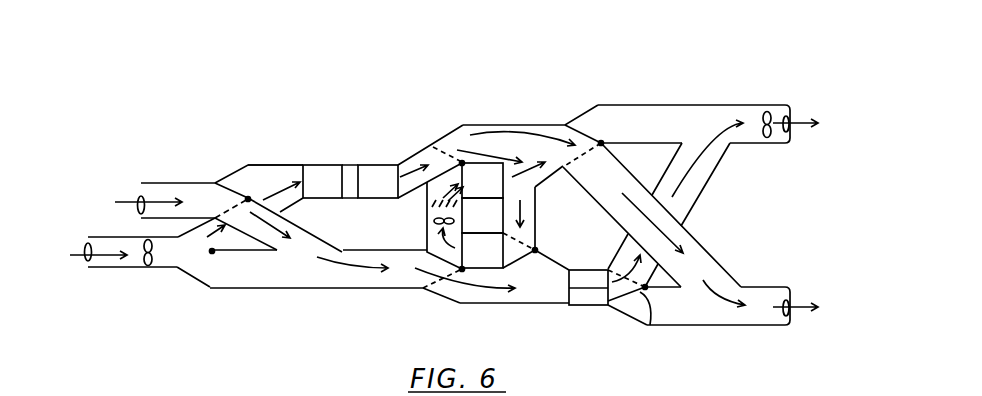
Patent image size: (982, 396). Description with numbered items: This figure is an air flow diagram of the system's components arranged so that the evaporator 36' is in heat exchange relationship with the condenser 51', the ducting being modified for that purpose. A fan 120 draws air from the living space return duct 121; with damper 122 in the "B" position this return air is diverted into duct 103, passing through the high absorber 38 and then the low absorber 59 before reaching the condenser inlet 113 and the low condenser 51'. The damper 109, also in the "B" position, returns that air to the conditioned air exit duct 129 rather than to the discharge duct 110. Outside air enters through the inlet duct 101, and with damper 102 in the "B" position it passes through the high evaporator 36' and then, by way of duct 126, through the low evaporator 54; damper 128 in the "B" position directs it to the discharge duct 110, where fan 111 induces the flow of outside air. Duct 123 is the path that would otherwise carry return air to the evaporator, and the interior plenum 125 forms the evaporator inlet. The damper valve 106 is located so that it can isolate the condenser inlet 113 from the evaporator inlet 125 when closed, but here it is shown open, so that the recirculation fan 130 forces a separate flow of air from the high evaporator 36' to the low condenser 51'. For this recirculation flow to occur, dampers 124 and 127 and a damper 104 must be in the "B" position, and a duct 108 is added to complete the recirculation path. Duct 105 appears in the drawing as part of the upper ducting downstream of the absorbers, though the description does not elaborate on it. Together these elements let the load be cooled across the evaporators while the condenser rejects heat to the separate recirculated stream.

The outside air inlet duct 101 is at (180, 183).
The damper 102 is at (240, 180).
The duct 103 is at (283, 164).
The high absorber 38 is at (328, 165).
The low absorber 59 is at (380, 165).
The damper 104 is at (445, 158).
The upper air duct 105 is at (487, 124).
The condenser 51' is at (501, 149).
The evaporator 36' is at (470, 267).
The damper valve 106 is at (426, 218).
The condenser inlet duct 113 is at (432, 203).
The recirculation fan 130 is at (436, 224).
The interior plenum 125 is at (427, 244).
The damper 124 is at (440, 270).
The duct 126 is at (490, 304).
The damper 127 is at (569, 288).
The low evaporator 54 is at (585, 306).
The damper 128 is at (653, 325).
The conditioned air exit duct 129 is at (730, 325).
The duct 108 is at (537, 217).
The damper 109 is at (601, 142).
The discharge duct 110 is at (722, 105).
The fan 111 is at (769, 110).
The fan 120 is at (148, 268).
The living space return duct 121 is at (122, 270).
The damper 122 is at (190, 273).
The duct 123 is at (277, 289).